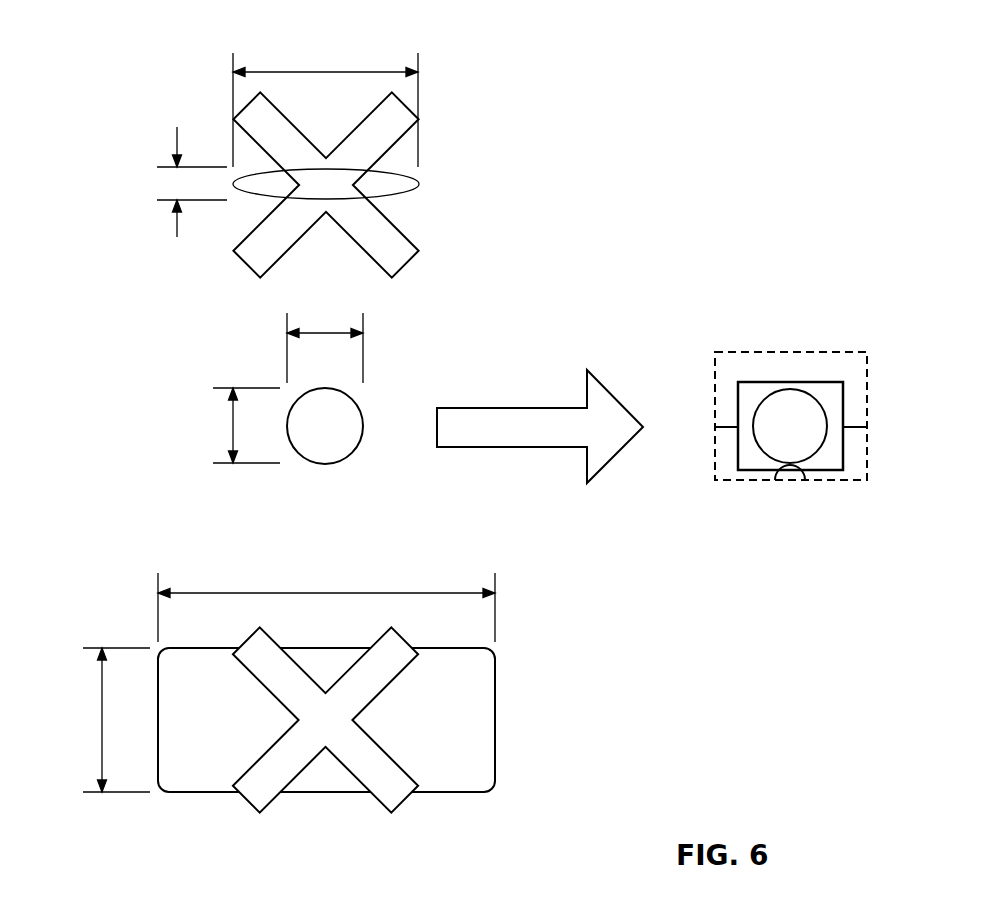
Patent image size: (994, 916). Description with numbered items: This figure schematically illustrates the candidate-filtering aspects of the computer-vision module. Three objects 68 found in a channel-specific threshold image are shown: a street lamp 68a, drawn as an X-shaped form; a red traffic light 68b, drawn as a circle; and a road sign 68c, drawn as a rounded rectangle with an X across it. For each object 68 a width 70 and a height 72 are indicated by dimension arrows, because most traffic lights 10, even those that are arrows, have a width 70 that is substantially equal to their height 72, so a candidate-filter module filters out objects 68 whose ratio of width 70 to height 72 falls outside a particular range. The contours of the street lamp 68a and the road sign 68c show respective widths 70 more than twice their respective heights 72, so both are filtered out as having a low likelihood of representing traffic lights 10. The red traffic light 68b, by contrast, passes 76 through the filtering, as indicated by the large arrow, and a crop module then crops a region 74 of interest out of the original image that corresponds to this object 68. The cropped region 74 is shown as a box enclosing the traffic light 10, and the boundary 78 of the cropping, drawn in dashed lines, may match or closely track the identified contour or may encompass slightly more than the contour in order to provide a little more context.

The traffic light 10 is at (827, 396).
The object 68 is at (406, 452).
The street lamp 68a is at (424, 183).
The red traffic light 68b is at (360, 401).
The road sign 68c is at (500, 676).
The width 70 is at (341, 70).
The height 72 is at (176, 136).
The region of interest 74 is at (815, 348).
The pass 76 is at (554, 438).
The boundary of the cropping 78 is at (775, 350).